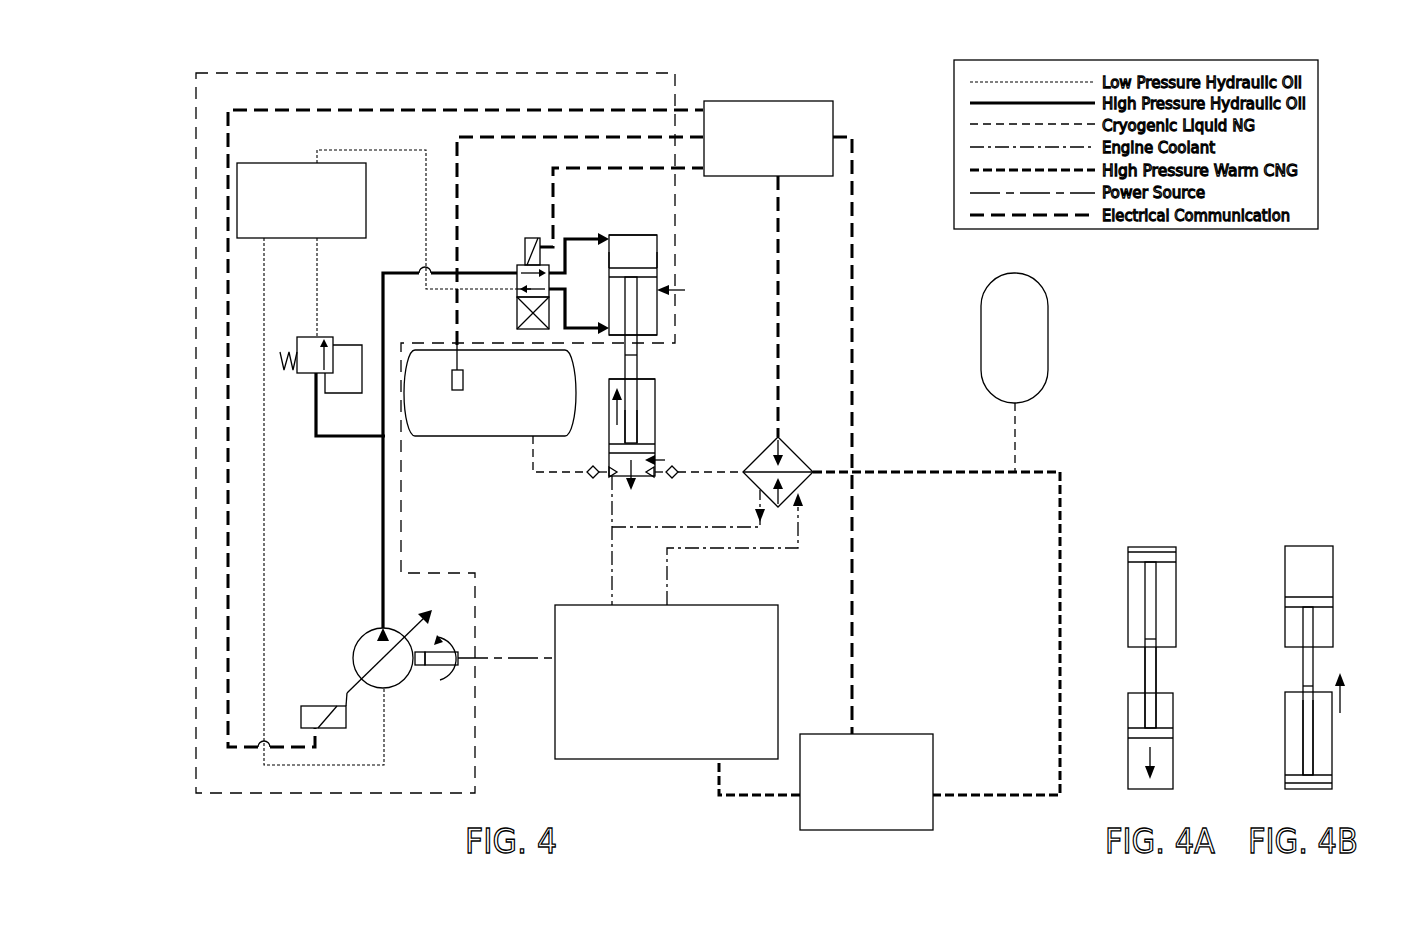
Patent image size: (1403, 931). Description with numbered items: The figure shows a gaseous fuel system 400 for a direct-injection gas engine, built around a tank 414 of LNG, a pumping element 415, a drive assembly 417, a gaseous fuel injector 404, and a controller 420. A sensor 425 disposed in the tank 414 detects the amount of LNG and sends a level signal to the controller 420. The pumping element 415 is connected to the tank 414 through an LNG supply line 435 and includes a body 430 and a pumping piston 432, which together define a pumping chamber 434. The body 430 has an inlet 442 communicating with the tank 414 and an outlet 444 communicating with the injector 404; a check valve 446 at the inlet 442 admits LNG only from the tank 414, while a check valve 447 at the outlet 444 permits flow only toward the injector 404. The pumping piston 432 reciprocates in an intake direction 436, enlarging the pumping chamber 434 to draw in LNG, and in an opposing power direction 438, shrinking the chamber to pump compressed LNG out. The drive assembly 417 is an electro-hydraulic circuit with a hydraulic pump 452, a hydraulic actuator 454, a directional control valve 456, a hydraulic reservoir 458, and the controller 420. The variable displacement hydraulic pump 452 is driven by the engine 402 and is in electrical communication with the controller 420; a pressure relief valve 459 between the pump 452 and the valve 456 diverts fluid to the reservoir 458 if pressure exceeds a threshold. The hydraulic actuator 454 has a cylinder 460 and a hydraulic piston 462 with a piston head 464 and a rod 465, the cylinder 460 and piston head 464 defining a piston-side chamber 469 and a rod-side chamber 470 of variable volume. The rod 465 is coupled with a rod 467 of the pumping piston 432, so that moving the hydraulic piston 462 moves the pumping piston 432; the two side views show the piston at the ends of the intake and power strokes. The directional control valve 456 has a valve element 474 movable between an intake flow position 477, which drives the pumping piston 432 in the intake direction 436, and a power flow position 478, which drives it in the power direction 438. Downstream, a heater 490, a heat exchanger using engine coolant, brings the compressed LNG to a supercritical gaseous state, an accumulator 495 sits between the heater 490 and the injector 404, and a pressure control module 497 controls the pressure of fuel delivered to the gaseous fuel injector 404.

In FIG. 4, the gaseous fuel system 400 is at (183, 152).
In FIG. 4, the engine 402 is at (640, 759).
In FIG. 4, the gaseous fuel injector 404 is at (727, 641).
In FIG. 4, the tank 414 is at (430, 436).
In FIG. 4, the pumping element 415 is at (620, 379).
In FIG. 4A, the pumping element 415 is at (1128, 708).
In FIG. 4B, the pumping element 415 is at (1285, 740).
In FIG. 4, the drive assembly 417 is at (196, 433).
In FIG. 4, the controller 420 is at (770, 101).
In FIG. 4, the sensor 425 is at (457, 392).
In FIG. 4, the body 430 is at (655, 437).
In FIG. 4, the pumping piston 432 is at (631, 418).
In FIG. 4A, the pumping piston 432 is at (1157, 667).
In FIG. 4B, the pumping piston 432 is at (1308, 755).
In FIG. 4, the pumping chamber 434 is at (665, 460).
In FIG. 4, the LNG supply line 435 is at (533, 455).
In FIG. 4, the intake direction 436 is at (612, 417).
In FIG. 4B, the intake direction 436 is at (1343, 700).
In FIG. 4, the power direction 438 is at (631, 466).
In FIG. 4A, the power direction 438 is at (1153, 755).
In FIG. 4, the inlet 442 is at (609, 478).
In FIG. 4, the outlet 444 is at (652, 478).
In FIG. 4, the check valve 446 is at (587, 475).
In FIG. 4, the check valve 447 is at (678, 475).
In FIG. 4, the hydraulic pump 452 is at (362, 633).
In FIG. 4, the hydraulic actuator 454 is at (632, 228).
In FIG. 4A, the hydraulic actuator 454 is at (1151, 538).
In FIG. 4B, the hydraulic actuator 454 is at (1300, 538).
In FIG. 4, the directional control valve 456 is at (533, 238).
In FIG. 4, the hydraulic reservoir 458 is at (292, 163).
In FIG. 4, the pressure relief valve 459 is at (300, 337).
In FIG. 4, the cylinder 460 is at (657, 252).
In FIG. 4, the hydraulic piston 462 is at (637, 315).
In FIG. 4A, the hydraulic piston 462 is at (1152, 600).
In FIG. 4B, the hydraulic piston 462 is at (1307, 623).
In FIG. 4, the piston head 464 is at (657, 272).
In FIG. 4, the rod 465 is at (640, 329).
In FIG. 4, the rod 467 is at (637, 375).
In FIG. 4, the piston-side chamber 469 is at (652, 238).
In FIG. 4, the rod-side chamber 470 is at (685, 290).
In FIG. 4, the valve element 474 is at (522, 265).
In FIG. 4, the intake flow position 477 is at (517, 322).
In FIG. 4, the power flow position 478 is at (517, 287).
In FIG. 4, the heater 490 is at (790, 492).
In FIG. 4, the accumulator 495 is at (981, 330).
In FIG. 4, the pressure control module 497 is at (890, 734).